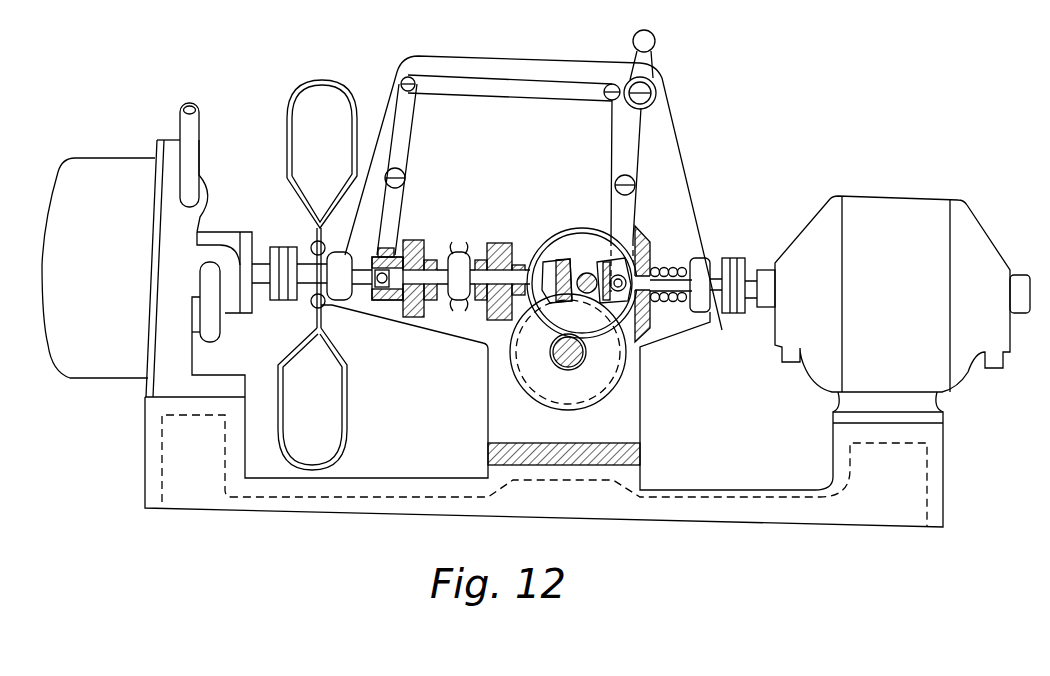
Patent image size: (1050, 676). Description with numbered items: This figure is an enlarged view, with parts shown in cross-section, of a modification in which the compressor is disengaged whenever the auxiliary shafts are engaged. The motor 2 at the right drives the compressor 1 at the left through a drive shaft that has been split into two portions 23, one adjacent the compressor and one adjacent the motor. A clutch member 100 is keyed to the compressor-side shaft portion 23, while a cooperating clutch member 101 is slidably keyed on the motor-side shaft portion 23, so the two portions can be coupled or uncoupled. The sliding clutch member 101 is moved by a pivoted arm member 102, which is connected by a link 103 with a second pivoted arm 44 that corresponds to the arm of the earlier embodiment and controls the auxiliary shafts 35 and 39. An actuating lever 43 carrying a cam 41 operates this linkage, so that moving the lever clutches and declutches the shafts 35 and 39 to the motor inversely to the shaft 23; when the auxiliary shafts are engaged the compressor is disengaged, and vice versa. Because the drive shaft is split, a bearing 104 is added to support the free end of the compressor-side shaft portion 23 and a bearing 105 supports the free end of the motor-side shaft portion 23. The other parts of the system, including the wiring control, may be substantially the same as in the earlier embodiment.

The compressor 1 is at (116, 170).
The motor 2 is at (899, 204).
The drive shaft portions 23 is at (363, 262).
The shaft 35 is at (588, 262).
The shaft 39 is at (570, 366).
The cam 41 is at (664, 98).
The actuating lever 43 is at (656, 62).
The pivoted arm 44 is at (636, 166).
The clutch member 100 is at (421, 250).
The cooperating clutch member 101 is at (402, 245).
The pivoted arm member 102 is at (410, 122).
The link 103 is at (542, 86).
The bearing 104 is at (461, 300).
The bearing 105 is at (346, 291).